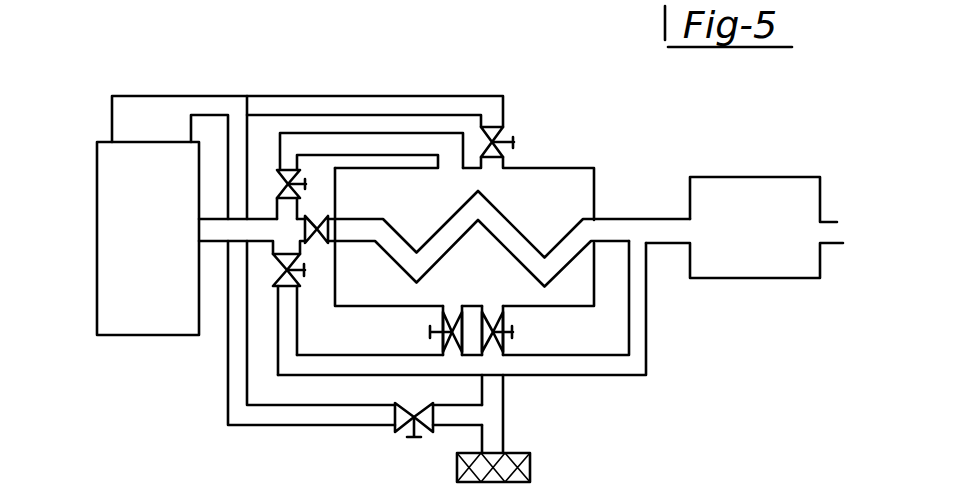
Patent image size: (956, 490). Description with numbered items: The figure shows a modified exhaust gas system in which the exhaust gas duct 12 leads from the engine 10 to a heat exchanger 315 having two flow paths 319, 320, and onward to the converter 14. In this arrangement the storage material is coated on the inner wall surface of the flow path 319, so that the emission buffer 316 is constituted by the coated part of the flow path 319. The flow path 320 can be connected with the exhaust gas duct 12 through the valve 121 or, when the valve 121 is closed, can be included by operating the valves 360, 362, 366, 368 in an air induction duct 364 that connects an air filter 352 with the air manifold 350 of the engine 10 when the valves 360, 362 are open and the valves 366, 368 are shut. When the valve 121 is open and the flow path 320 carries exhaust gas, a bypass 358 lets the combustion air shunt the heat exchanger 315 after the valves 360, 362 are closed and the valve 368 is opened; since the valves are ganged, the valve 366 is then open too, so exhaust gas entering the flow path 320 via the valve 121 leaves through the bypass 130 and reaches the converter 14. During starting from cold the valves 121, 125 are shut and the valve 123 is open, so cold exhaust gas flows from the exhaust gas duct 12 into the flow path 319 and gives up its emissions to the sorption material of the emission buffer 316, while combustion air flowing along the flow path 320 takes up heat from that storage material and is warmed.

The engine 10 is at (133, 304).
The exhaust gas duct 12 is at (211, 224).
The converter 14 is at (742, 196).
The valve 121 is at (283, 170).
The valve 123 is at (318, 216).
The valve 125 is at (281, 272).
The bypass 130 is at (638, 353).
The heat exchanger 315 is at (596, 170).
The emission buffer 316 is at (512, 236).
The flow path 319 is at (440, 247).
The flow path 320 is at (449, 163).
The air manifold 350 is at (131, 104).
The air filter 352 is at (531, 465).
The bypass 358 is at (311, 361).
The valve 360 is at (506, 342).
The valve 362 is at (507, 138).
The air induction duct 364 is at (470, 98).
The valve 366 is at (428, 338).
The valve 368 is at (418, 441).